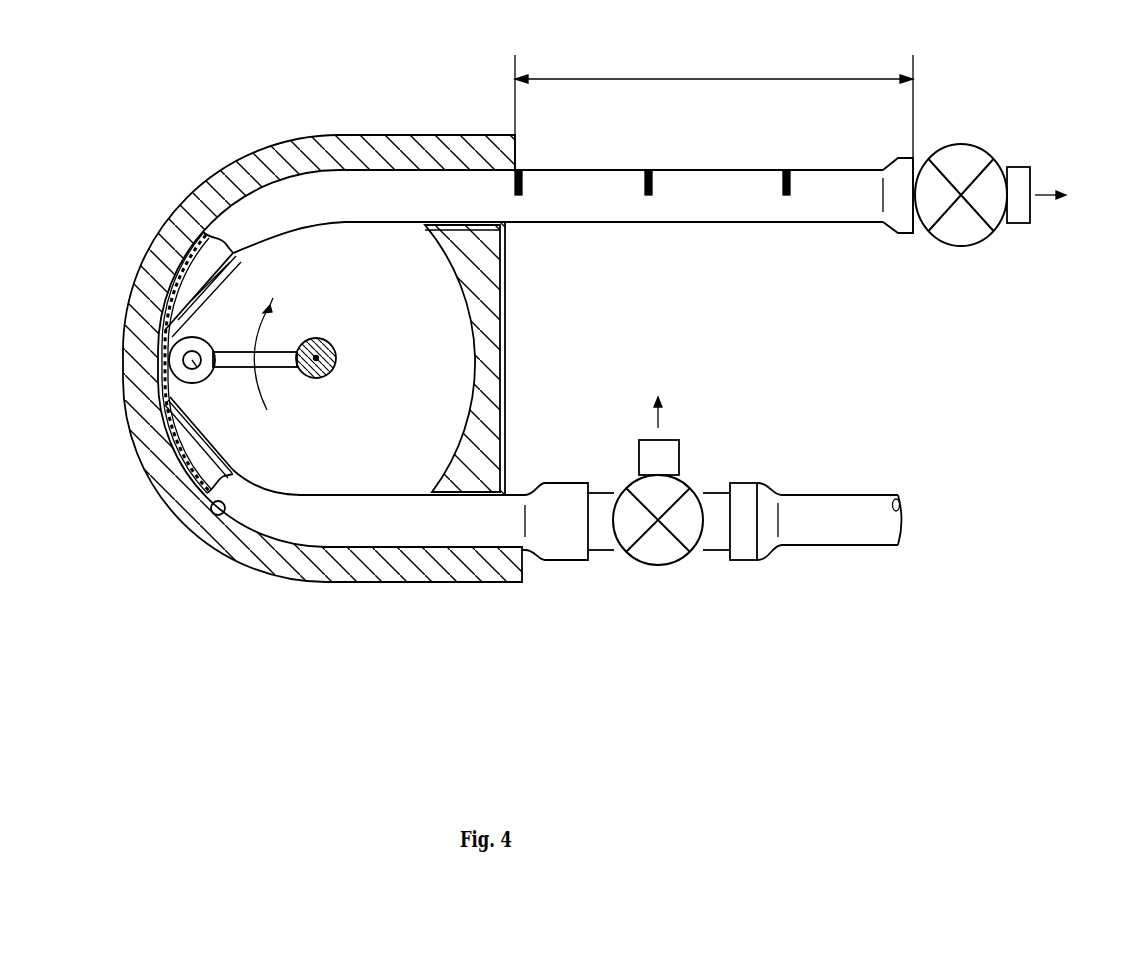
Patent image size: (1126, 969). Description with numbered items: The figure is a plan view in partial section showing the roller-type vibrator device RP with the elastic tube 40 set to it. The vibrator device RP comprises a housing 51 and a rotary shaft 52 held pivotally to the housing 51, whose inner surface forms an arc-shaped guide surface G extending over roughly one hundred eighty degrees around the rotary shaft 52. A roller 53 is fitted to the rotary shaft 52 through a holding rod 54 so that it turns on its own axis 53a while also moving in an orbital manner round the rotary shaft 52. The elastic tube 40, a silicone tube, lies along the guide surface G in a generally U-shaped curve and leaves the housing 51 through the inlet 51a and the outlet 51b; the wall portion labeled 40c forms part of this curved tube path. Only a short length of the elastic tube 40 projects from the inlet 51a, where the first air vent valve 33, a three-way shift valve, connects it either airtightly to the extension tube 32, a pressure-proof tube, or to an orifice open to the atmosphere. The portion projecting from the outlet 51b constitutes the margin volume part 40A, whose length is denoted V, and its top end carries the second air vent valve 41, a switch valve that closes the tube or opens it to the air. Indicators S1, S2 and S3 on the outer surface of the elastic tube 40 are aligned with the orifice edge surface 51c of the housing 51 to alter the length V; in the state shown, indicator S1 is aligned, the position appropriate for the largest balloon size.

The elastic tube 40 is at (322, 392).
The margin volume part 40A is at (629, 227).
The side wall of cylinder 40c is at (245, 358).
The second air vent valve 41 is at (1008, 179).
The housing 51 is at (415, 435).
The inlet 51a is at (536, 462).
The outlet 51b is at (537, 250).
The orifice edge surface 51c is at (551, 131).
The rotary shaft 52 is at (340, 356).
The roller 53 is at (205, 335).
The axis of roller 53a is at (214, 391).
The holding rod 54 is at (257, 391).
The extension tube 32 is at (802, 543).
The first air vent valve 33 is at (658, 502).
The guide surface G is at (184, 546).
The vibrator device RP is at (213, 601).
The indicator S1 is at (544, 178).
The indicator S2 is at (673, 174).
The indicator S3 is at (809, 174).
The length of margin volume part V is at (714, 141).